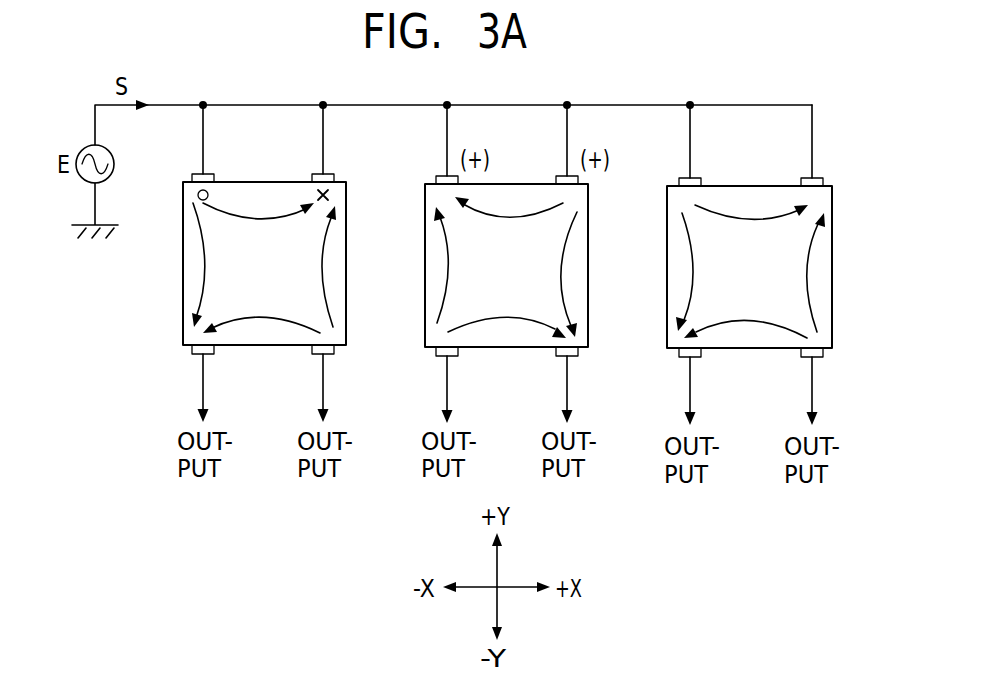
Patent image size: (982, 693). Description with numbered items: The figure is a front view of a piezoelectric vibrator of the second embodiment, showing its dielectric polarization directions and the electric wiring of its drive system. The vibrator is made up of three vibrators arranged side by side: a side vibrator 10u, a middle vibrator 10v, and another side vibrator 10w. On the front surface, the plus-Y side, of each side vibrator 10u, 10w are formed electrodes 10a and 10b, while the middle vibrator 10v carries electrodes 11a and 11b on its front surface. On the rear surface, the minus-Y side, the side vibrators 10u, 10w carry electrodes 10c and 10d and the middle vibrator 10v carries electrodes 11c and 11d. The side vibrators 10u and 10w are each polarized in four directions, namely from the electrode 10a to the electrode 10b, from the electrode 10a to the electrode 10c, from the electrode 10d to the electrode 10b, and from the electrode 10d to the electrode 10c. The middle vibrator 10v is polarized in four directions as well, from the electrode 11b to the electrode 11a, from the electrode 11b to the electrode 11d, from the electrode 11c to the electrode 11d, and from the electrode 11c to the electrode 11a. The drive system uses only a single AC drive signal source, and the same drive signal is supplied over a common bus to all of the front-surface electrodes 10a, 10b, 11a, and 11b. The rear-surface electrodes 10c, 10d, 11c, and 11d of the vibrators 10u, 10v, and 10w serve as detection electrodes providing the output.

The electrode 10a is at (194, 173).
The electrode 10b is at (313, 173).
The electrode 10c is at (194, 356).
The electrode 10d is at (315, 356).
The vibrator 10u is at (183, 282).
The middle vibrator 10v is at (425, 282).
The vibrator 10w is at (667, 288).
The electrode 11a is at (437, 175).
The electrode 11b is at (557, 175).
The electrode 11c is at (437, 357).
The electrode 11d is at (559, 357).